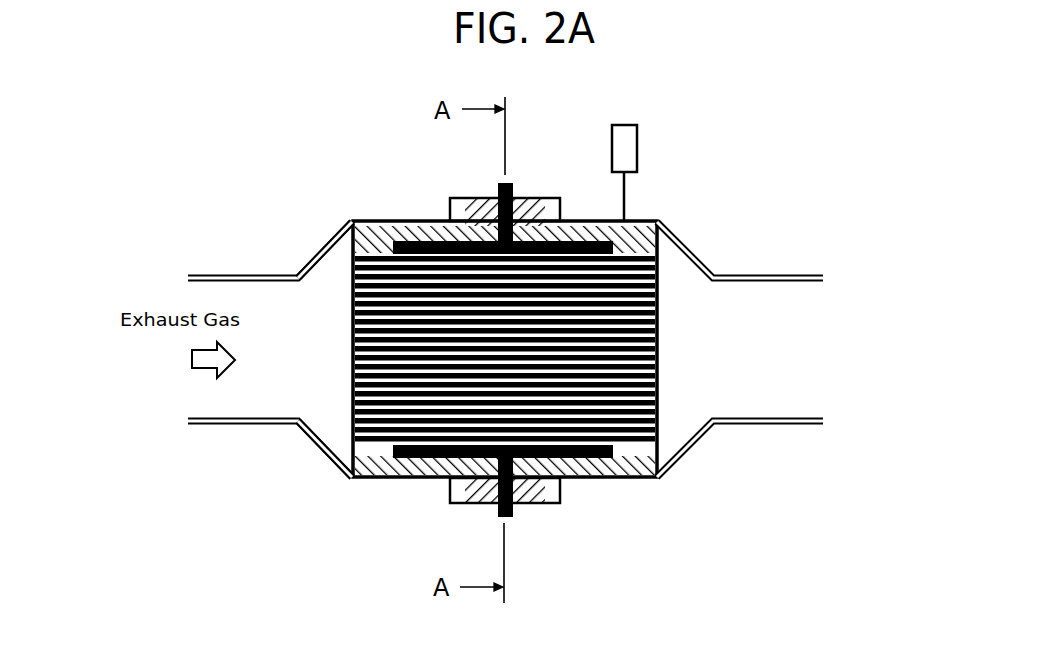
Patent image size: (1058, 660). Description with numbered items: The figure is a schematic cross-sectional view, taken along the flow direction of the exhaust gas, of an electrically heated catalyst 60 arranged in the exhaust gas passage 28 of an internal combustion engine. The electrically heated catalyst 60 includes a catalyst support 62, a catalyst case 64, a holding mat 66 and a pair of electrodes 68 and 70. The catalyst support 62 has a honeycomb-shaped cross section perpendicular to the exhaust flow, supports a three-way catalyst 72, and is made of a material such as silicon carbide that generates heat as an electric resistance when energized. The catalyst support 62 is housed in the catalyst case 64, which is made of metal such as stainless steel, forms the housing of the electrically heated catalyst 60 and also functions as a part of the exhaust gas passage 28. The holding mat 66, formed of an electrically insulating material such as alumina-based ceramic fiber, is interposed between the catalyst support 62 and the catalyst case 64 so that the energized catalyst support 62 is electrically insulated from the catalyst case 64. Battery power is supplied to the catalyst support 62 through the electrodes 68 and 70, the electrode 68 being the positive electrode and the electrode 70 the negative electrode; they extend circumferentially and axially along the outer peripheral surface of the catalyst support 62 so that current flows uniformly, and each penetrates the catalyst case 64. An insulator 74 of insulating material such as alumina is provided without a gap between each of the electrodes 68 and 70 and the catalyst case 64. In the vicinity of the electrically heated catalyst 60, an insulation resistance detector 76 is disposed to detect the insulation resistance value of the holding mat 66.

The exhaust gas passage 28 is at (265, 390).
The electrically heated catalyst 60 is at (750, 165).
The catalyst support 62 is at (352, 334).
The catalyst case 64 is at (322, 247).
The holding mat 66 is at (660, 243).
The electrode 68 is at (510, 183).
The electrode 70 is at (508, 518).
The three-way catalyst 72 is at (375, 303).
The insulator 74 is at (480, 197).
The insulation resistance detector 76 is at (638, 140).